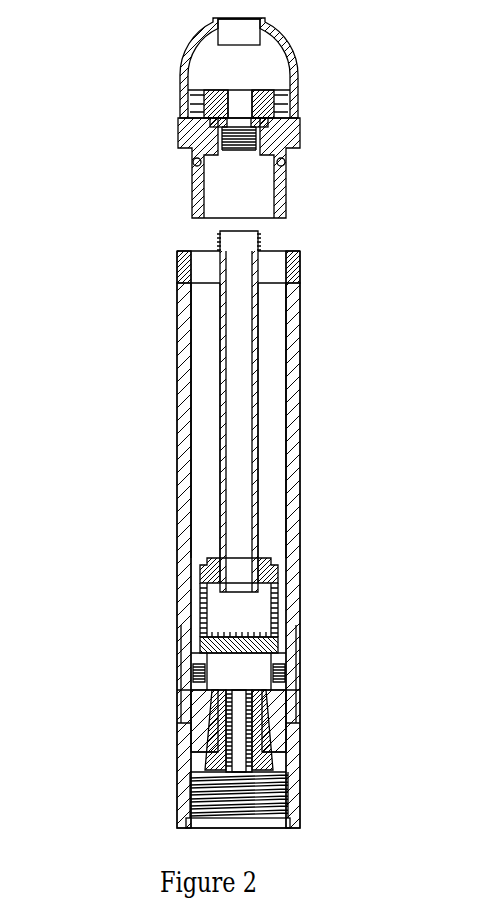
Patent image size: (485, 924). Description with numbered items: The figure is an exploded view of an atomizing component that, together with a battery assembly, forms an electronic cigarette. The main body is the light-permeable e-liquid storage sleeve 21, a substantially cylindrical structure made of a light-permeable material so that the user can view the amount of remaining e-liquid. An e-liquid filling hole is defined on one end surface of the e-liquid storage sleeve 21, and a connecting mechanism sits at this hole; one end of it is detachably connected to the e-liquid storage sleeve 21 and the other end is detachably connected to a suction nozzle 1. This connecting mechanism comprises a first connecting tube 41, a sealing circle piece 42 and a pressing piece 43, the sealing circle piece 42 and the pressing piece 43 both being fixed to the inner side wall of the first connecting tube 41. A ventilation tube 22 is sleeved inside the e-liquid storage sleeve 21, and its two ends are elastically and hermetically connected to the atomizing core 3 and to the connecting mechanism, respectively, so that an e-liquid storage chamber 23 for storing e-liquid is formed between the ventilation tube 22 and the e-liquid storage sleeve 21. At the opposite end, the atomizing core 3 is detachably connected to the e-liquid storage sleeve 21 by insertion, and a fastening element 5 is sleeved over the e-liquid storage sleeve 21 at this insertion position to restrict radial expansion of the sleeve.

The suction nozzle 1 is at (178, 63).
The pressing piece 43 is at (290, 98).
The sealing circle piece 42 is at (292, 126).
The first connecting tube 41 is at (192, 188).
The e-liquid storage sleeve 21 is at (178, 306).
The ventilation tube 22 is at (220, 405).
The e-liquid storage chamber 23 is at (205, 505).
The fastening element 5 is at (292, 697).
The atomizing core 3 is at (295, 798).